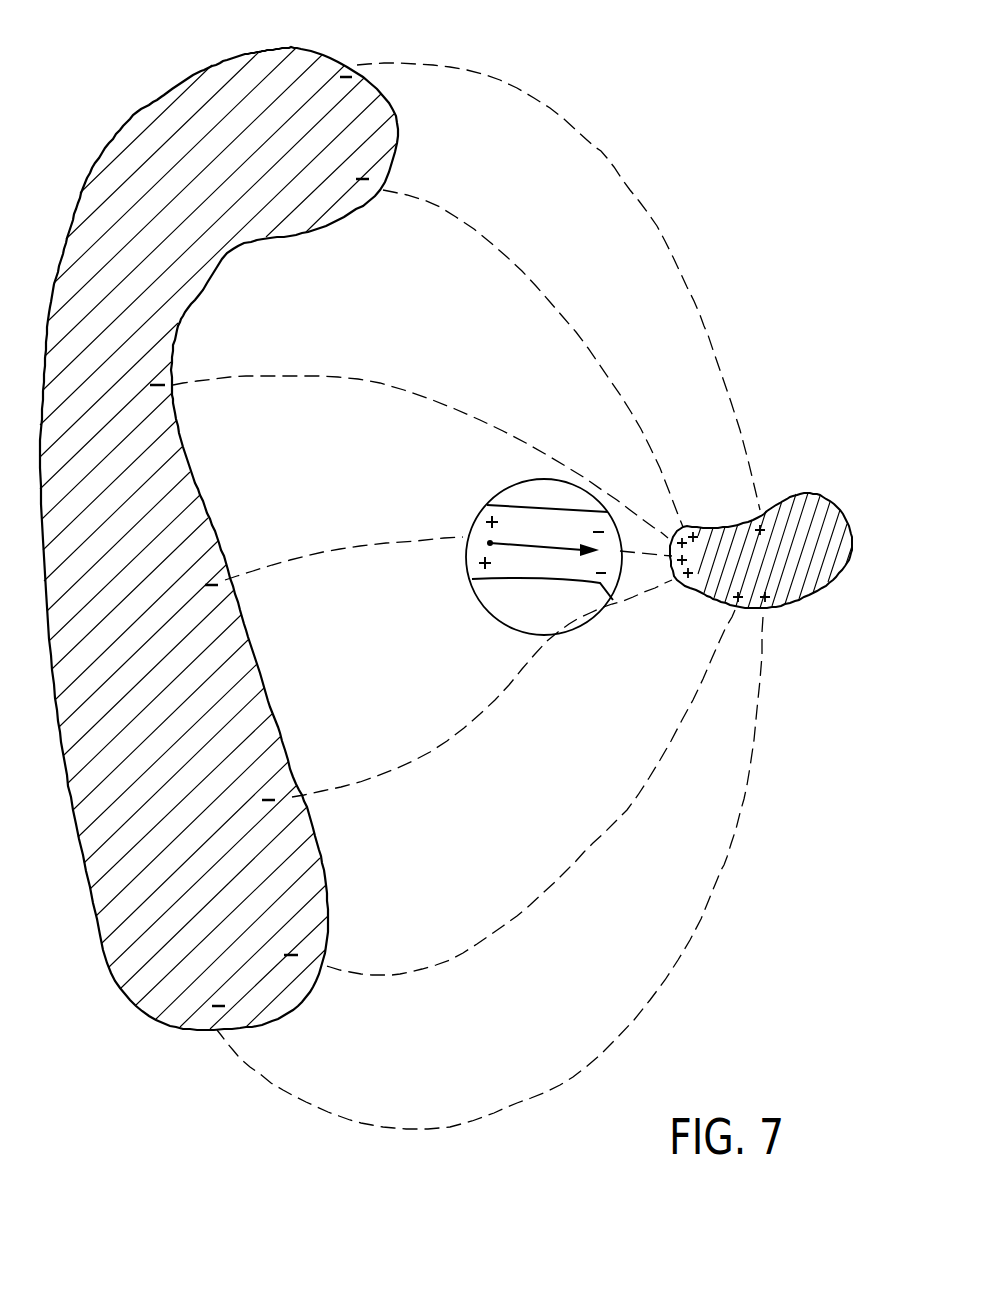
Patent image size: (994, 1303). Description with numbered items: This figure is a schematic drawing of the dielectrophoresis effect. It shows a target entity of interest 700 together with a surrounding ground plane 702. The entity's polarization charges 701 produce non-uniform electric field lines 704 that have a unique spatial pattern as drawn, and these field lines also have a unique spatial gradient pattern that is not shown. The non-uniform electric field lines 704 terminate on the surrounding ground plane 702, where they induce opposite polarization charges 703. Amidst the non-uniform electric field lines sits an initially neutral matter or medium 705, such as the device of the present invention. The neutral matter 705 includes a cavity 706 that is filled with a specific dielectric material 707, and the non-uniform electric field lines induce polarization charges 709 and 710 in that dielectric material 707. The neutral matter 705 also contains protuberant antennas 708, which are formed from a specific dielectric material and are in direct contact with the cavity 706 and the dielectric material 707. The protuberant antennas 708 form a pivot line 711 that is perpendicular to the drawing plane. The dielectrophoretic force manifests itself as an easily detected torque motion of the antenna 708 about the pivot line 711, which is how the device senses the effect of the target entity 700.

The target entity of interest 700 is at (807, 580).
The polarization charges 701 is at (767, 513).
The surrounding ground plane 702 is at (182, 110).
The opposite polarization charges 703 is at (380, 183).
The non-uniform electric field lines 704 is at (618, 172).
The neutral matter 705 is at (508, 484).
The cavity 706 is at (517, 576).
The dielectric material 707 is at (567, 525).
The protuberant antennas 708 is at (547, 547).
The polarization charges 709 is at (485, 522).
The polarization charges 710 is at (622, 555).
The pivot line 711 is at (490, 543).